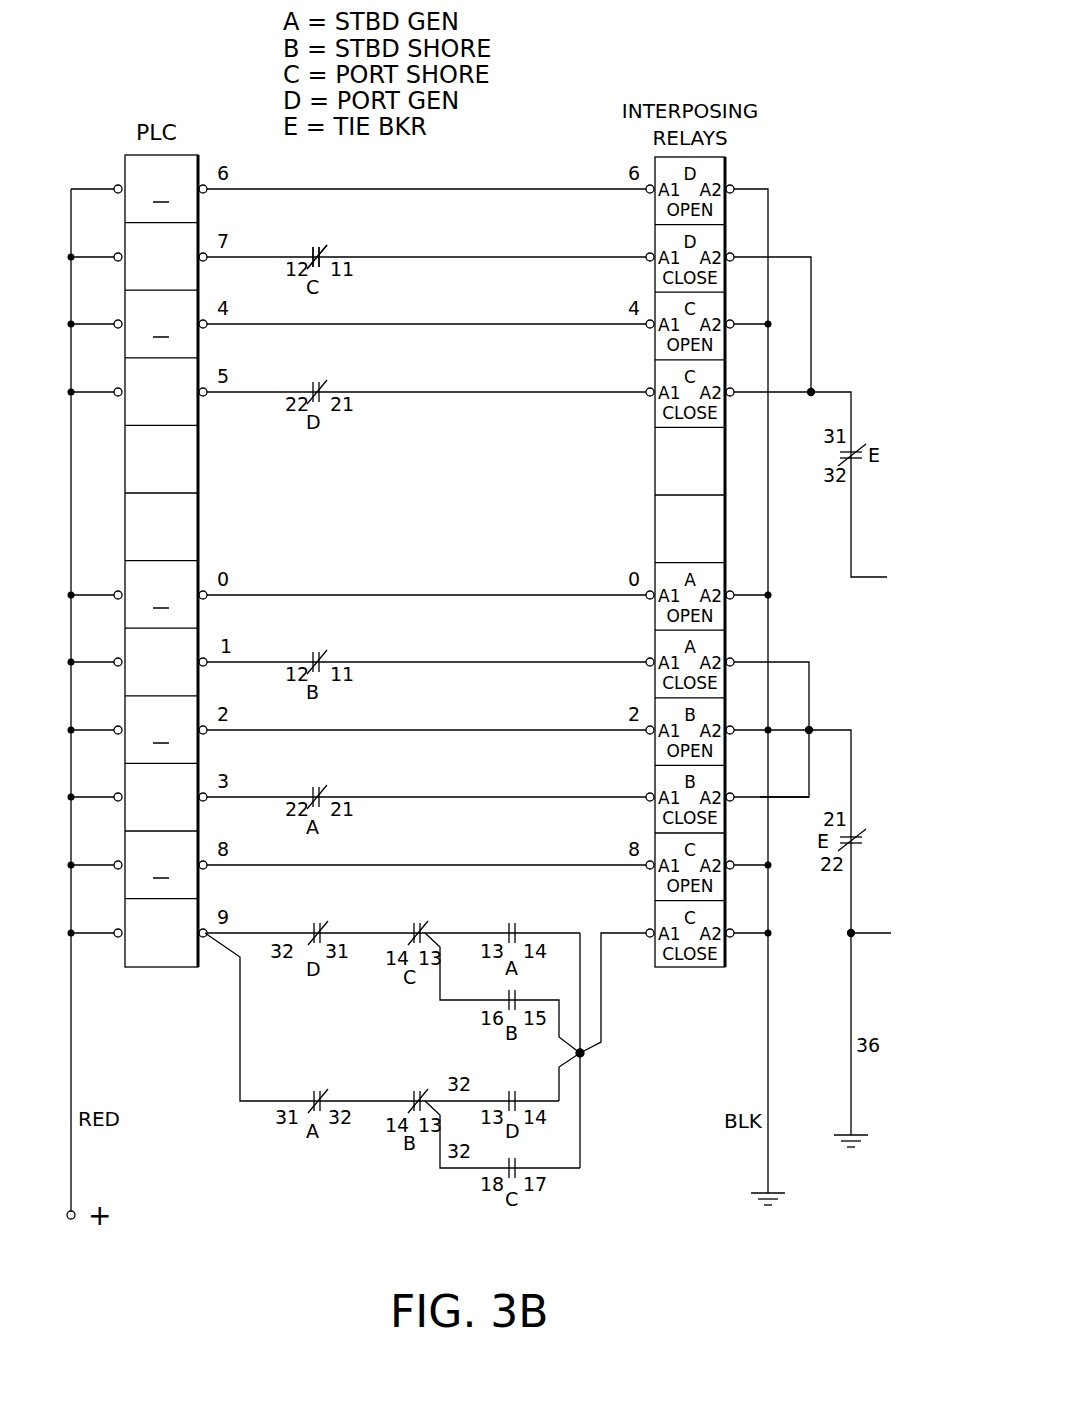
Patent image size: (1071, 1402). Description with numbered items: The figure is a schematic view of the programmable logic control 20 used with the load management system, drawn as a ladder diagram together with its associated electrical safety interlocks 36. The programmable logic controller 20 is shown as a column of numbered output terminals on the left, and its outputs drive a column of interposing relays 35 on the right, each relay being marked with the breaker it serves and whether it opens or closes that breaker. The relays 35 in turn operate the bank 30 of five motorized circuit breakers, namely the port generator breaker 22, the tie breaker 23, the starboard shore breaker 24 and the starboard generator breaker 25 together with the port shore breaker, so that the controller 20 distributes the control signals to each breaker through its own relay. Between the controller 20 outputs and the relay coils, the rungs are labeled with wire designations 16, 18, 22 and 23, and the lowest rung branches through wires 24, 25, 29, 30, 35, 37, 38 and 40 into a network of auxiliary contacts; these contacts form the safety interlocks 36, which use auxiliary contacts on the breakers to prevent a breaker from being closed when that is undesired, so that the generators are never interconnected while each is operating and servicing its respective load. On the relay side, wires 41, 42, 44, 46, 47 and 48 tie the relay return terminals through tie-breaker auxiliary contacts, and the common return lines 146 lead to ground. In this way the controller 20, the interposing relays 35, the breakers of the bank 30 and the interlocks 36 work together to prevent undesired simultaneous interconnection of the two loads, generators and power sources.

The programmable logic controller 20 is at (198, 155).
The safety interlocks 36 is at (330, 242).
The wire 16 is at (429, 249).
The wire 18 is at (429, 384).
The port generator breaker 22 is at (429, 654).
The tie breaker 23 is at (429, 789).
The starboard shore breaker 24 is at (393, 925).
The starboard generator breaker 25 is at (494, 978).
The wire 29 is at (382, 1017).
The bank of motorized circuit breakers 30 is at (368, 1093).
The interposing relays 35 is at (557, 1036).
The wire 37 is at (544, 1082).
The wire 38 is at (502, 1139).
The wire 40 is at (611, 980).
The wire 41 is at (772, 310).
The wire 42 is at (774, 380).
The wire 44 is at (849, 470).
The wire 46 is at (771, 715).
The wire 47 is at (784, 784).
The wire 48 is at (829, 924).
The ground wire 146 is at (810, 697).